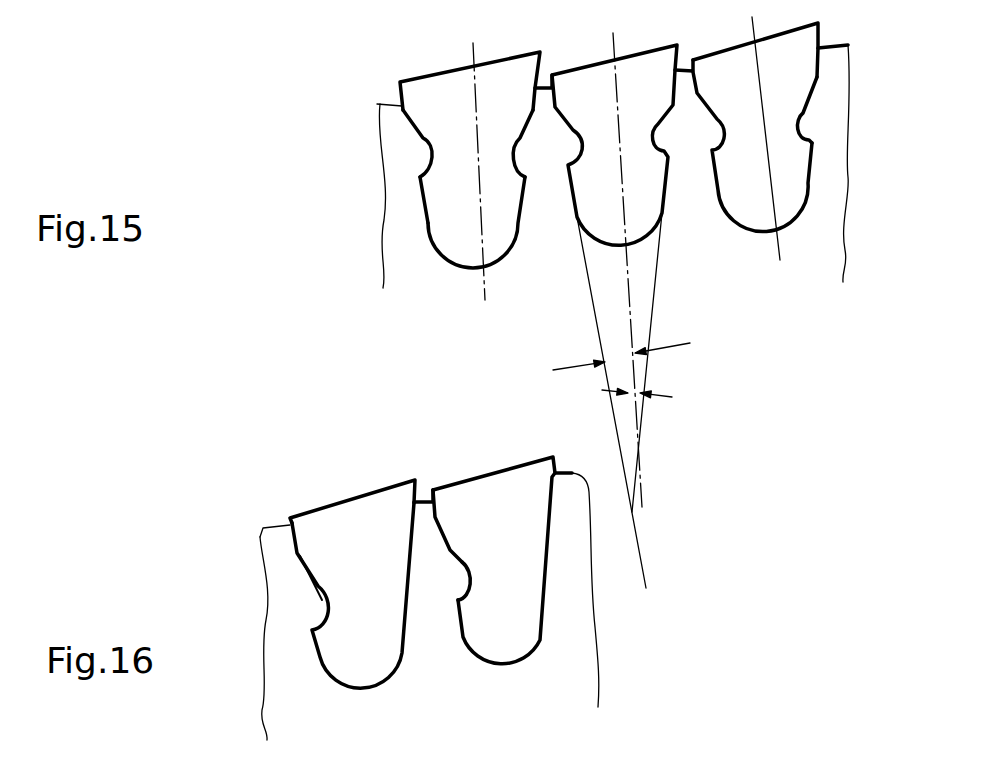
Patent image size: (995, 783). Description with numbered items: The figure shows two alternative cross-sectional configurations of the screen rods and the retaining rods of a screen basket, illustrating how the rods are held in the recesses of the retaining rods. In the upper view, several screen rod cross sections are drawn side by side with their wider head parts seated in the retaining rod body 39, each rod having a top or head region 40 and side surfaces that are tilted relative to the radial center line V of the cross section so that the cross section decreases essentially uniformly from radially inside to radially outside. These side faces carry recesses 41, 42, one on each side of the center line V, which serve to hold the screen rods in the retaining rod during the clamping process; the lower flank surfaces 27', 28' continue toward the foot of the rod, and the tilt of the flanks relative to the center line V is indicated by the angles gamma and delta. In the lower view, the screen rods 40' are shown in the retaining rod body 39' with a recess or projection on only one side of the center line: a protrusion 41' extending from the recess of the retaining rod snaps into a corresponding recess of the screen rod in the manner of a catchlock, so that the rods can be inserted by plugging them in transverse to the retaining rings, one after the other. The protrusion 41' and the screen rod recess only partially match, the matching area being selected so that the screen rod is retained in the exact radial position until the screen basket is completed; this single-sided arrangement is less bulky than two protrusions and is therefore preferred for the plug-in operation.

In FIG. 15, the blade body 39 is at (358, 196).
In FIG. 15, the tooth tip 40 is at (493, 64).
In FIG. 15, the recess 41 is at (373, 153).
In FIG. 15, the recess 42 is at (516, 146).
In FIG. 15, the tooth flank 27' is at (372, 206).
In FIG. 15, the tooth flank 28' is at (496, 234).
In FIG. 15, the tooth axis V is at (486, 42).
In FIG. 16, the blade body 39' is at (292, 633).
In FIG. 16, the tooth tip 40' is at (368, 480).
In FIG. 16, the protrusion 41' is at (440, 546).